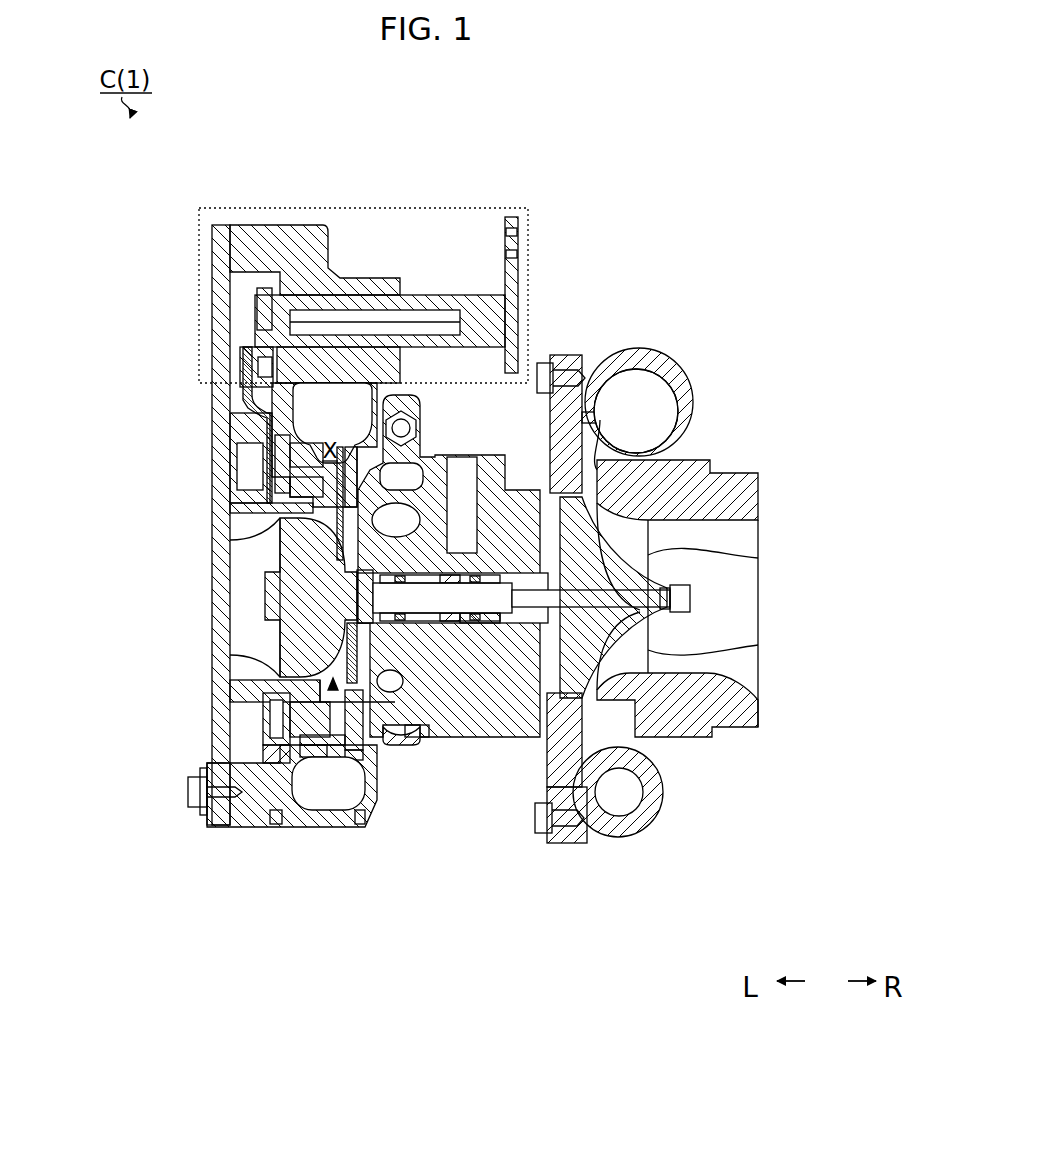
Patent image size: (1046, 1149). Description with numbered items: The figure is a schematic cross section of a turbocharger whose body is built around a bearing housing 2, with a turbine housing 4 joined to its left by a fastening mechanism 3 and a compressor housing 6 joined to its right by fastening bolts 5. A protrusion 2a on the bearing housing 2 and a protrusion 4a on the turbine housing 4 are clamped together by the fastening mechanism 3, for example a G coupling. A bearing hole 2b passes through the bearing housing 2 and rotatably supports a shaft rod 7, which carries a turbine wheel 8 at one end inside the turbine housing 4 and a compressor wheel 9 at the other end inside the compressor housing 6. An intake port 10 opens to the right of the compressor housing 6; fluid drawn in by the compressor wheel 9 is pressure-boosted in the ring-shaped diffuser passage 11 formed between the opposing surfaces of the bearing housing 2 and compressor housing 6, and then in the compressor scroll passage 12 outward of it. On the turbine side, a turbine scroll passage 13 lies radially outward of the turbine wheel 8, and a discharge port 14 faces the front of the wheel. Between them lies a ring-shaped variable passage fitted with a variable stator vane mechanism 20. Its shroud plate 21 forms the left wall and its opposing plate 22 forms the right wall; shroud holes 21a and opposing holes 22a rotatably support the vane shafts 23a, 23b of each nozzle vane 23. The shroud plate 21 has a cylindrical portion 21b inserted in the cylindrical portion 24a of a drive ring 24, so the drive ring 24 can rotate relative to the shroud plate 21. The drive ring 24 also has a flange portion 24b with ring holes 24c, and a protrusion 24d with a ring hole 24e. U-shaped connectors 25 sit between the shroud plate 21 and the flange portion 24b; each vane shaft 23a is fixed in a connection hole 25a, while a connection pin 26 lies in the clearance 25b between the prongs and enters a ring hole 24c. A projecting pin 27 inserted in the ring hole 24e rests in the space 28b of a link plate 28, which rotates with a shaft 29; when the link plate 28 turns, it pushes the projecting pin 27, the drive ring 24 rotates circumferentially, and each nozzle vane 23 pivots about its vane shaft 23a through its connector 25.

The bearing housing 2 is at (537, 487).
The protrusion 2a is at (422, 740).
The bearing hole 2b is at (463, 603).
The fastening mechanism 3 is at (407, 756).
The turbine housing 4 is at (288, 208).
The protrusion 4a is at (398, 745).
The fastening bolts 5 is at (533, 835).
The compressor housing 6 is at (733, 473).
The shaft rod 7 is at (447, 607).
The turbine wheel 8 is at (300, 560).
The compressor wheel 9 is at (660, 553).
The intake port 10 is at (758, 522).
The diffuser passage 11 is at (617, 413).
The compressor scroll passage 12 is at (653, 377).
The turbine scroll passage 13 is at (353, 820).
The discharge port 14 is at (290, 540).
The variable stator vane mechanism 20 is at (330, 640).
The shroud plate 21 is at (330, 665).
The shroud holes 21a is at (262, 727).
The cylindrical portion 21b is at (257, 493).
The opposing plate 22 is at (338, 823).
The opposing holes 22a is at (327, 817).
The nozzle vane 23 is at (305, 820).
The vane shaft 23a is at (277, 823).
The vane shaft 23b is at (362, 823).
The drive ring 24 is at (257, 413).
The cylindrical portion 24a is at (253, 508).
The flange portion 24b is at (253, 460).
The ring holes 24c is at (262, 757).
The protrusion 24d is at (257, 343).
The ring hole 24e is at (257, 355).
The connector 25 is at (253, 383).
The connection hole 25a is at (262, 703).
The clearance 25b is at (257, 825).
The connection pin 26 is at (250, 818).
The projecting pin 27 is at (255, 330).
The link plate 28 is at (258, 272).
The space 28b is at (345, 345).
The shaft 29 is at (408, 317).